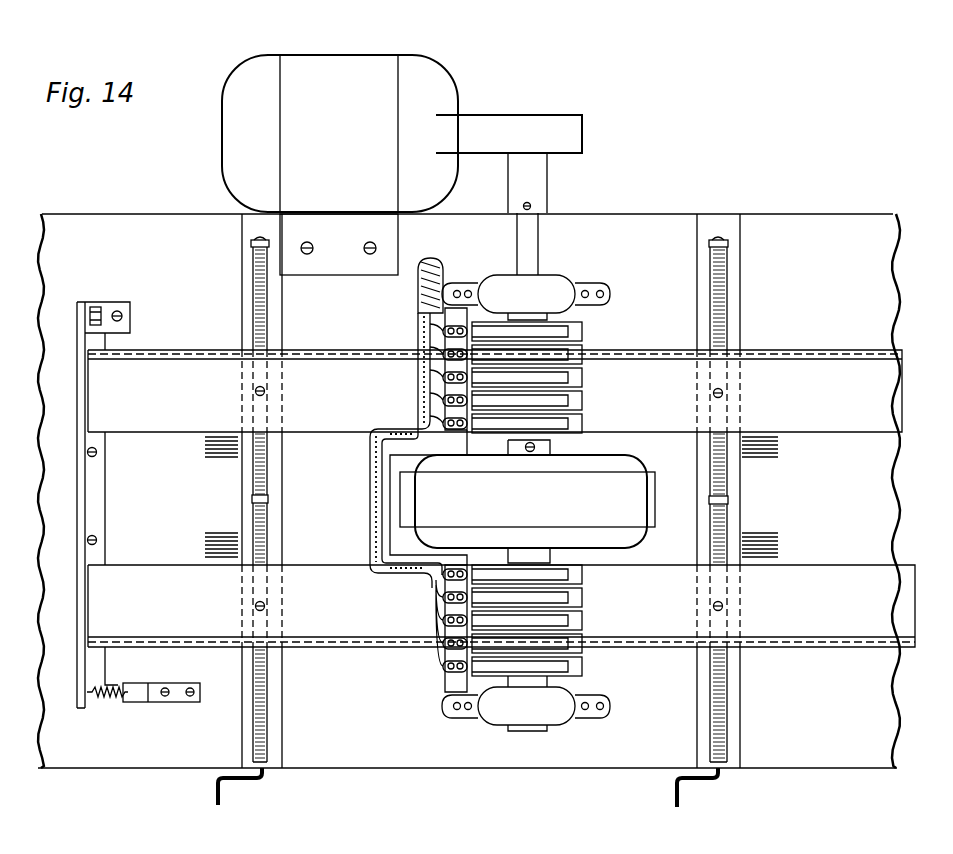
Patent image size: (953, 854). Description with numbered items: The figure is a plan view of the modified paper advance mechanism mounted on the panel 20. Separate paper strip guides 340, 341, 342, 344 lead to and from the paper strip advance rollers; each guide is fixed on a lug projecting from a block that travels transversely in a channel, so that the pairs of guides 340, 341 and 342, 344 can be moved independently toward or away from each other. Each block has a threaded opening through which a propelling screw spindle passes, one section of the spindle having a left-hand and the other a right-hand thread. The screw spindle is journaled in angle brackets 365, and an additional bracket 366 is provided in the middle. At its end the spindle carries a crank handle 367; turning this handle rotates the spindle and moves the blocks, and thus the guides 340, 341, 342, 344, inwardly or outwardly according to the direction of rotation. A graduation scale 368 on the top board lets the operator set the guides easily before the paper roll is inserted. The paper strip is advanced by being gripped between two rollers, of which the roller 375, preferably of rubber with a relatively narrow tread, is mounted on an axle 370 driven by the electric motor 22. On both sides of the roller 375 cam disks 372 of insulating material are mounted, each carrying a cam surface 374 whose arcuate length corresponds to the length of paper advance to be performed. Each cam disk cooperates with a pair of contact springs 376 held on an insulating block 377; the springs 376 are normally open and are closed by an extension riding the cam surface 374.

The panel frame 20 is at (895, 507).
The electric motor 22 is at (329, 64).
The paper strip guide 340 is at (825, 420).
The paper strip guide 341 is at (807, 580).
The paper strip guide 342 is at (154, 428).
The paper strip guide 344 is at (130, 580).
The angle bracket 365 is at (252, 242).
The additional bracket 366 is at (269, 500).
The crank handle 367 is at (260, 780).
The graduation scale 368 is at (221, 462).
The axle 370 is at (539, 250).
The cam disk 372 is at (583, 322).
The cam surface 374 is at (583, 668).
The roller 375 is at (648, 513).
The contact springs 376 is at (562, 572).
The insulating block 377 is at (447, 681).